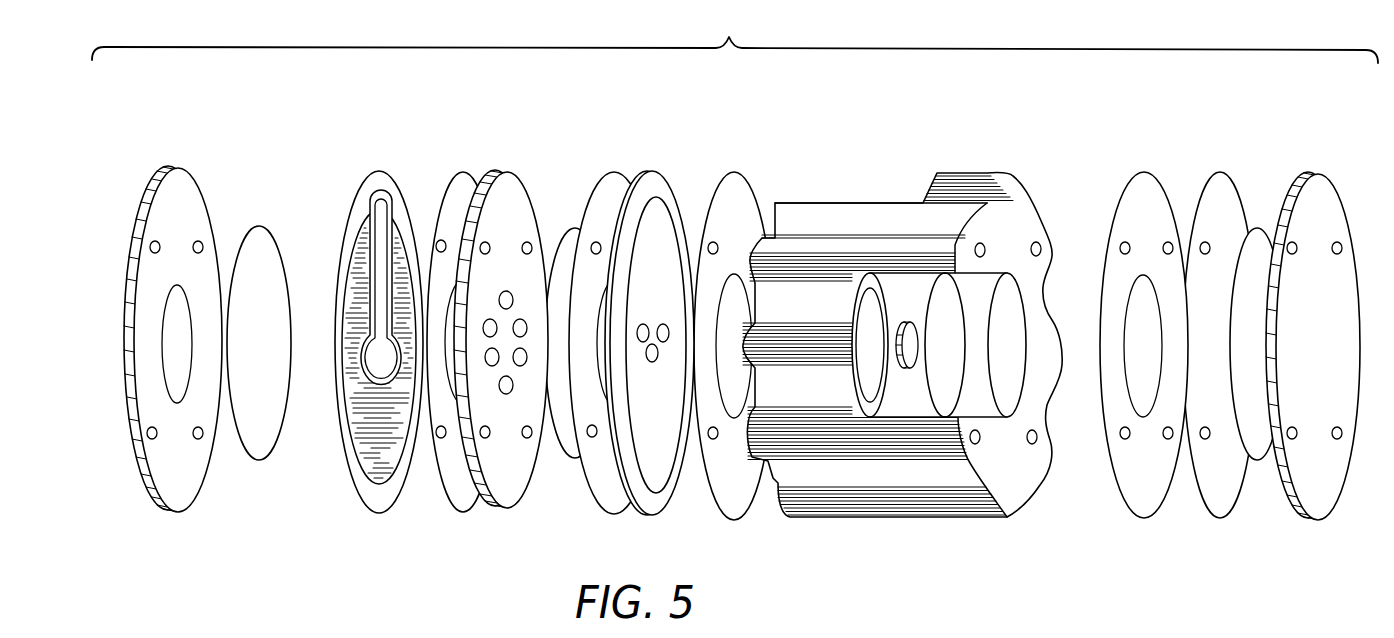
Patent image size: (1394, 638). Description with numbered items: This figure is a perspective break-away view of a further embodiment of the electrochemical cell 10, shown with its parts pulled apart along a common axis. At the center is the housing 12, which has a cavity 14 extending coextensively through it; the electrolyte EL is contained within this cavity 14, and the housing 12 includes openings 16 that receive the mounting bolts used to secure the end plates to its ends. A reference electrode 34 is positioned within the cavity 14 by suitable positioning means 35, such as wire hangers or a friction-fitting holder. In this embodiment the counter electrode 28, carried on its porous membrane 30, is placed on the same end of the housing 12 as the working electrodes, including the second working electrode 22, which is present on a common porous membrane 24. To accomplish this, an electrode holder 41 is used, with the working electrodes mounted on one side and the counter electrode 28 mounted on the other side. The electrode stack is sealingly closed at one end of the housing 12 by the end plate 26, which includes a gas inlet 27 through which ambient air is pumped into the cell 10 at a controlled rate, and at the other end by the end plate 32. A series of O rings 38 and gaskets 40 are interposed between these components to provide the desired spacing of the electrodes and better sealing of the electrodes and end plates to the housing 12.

The electrochemical cell 10 is at (773, 168).
The housing 12 is at (913, 340).
The cavity 14 is at (987, 407).
The openings 16 is at (1035, 243).
The second working electrode 22 is at (387, 456).
The porous membrane 24 is at (397, 210).
The end plate 26 is at (262, 322).
The gas inlet 27 is at (178, 307).
The counter electrode 28 is at (648, 453).
The porous membrane 30 is at (650, 324).
The end plate 32 is at (1298, 174).
The reference electrode 34 is at (907, 333).
The positioning means 35 is at (900, 403).
The O rings 38 is at (253, 438).
The gaskets 40 is at (468, 496).
The electrode holder 41 is at (490, 174).
The electrolyte EL is at (967, 359).